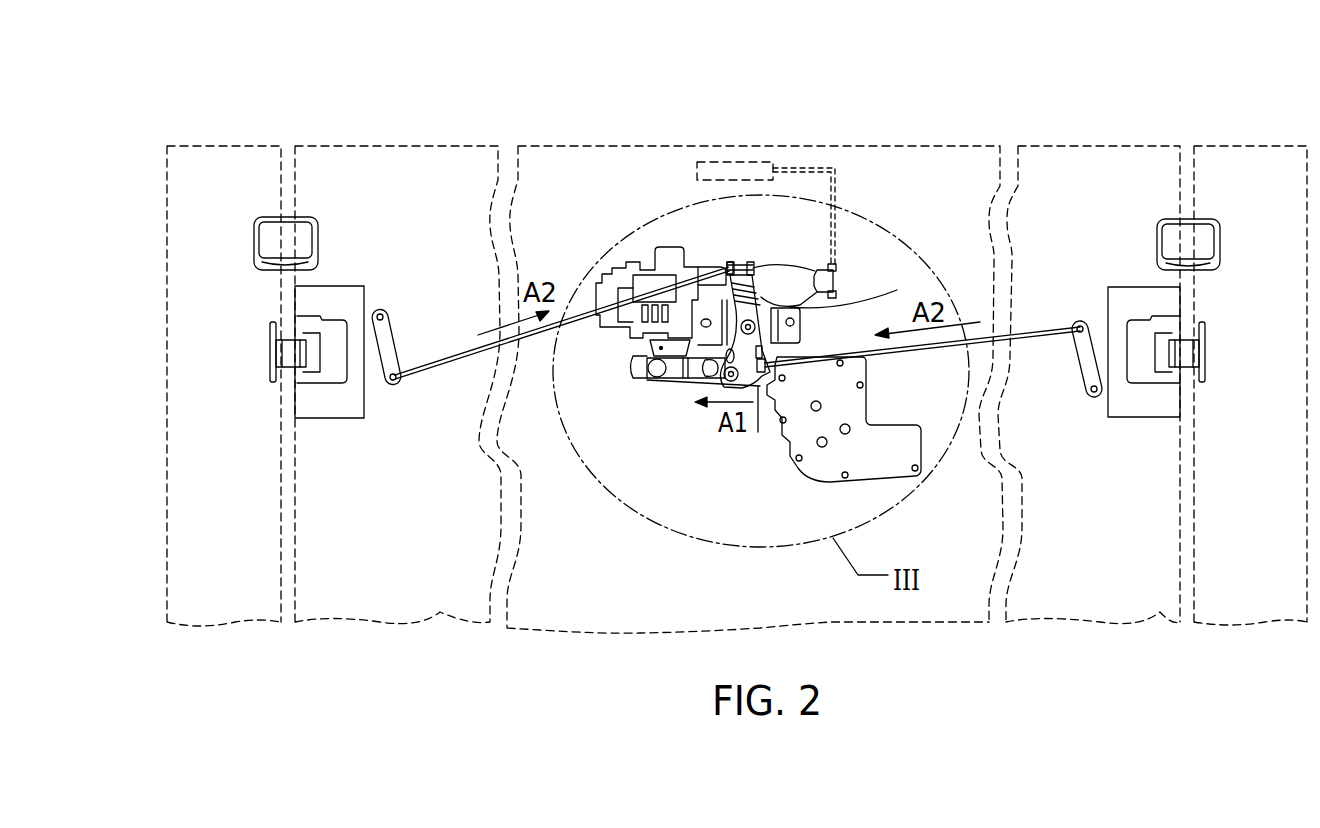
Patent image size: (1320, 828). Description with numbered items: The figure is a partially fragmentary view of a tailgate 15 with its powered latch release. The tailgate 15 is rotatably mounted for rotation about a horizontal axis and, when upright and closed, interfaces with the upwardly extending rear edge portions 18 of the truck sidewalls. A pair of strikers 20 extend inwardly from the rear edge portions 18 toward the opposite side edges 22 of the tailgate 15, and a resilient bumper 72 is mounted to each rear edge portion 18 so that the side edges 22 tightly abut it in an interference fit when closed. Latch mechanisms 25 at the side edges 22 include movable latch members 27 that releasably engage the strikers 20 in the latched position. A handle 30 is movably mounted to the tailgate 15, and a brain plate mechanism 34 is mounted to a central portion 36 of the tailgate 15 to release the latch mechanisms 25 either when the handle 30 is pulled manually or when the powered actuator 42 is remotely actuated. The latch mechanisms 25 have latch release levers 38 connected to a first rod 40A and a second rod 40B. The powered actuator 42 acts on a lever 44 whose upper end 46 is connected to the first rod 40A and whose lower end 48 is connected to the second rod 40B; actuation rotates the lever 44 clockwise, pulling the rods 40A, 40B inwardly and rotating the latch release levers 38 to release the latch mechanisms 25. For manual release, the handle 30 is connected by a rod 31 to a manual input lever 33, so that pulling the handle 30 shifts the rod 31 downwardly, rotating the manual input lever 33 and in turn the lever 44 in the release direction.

The tailgate 15 is at (445, 143).
The rear edge portion 18 is at (242, 160).
The striker 20 is at (288, 357).
The side edge 22 is at (292, 452).
The latch mechanism 25 is at (350, 402).
The movable latch member 27 is at (307, 370).
The handle 30 is at (745, 160).
The rod 31 is at (843, 177).
The manual input lever 33 is at (837, 283).
The brain plate mechanism 34 is at (893, 178).
The central portion 36 is at (838, 602).
The latch release lever 38 is at (400, 343).
The first rod 40A is at (428, 372).
The second rod 40B is at (1032, 337).
The powered actuator 42 is at (817, 462).
The lever 44 is at (754, 275).
The upper end 46 is at (737, 272).
The lower end 48 is at (752, 425).
The resilient bumper 72 is at (277, 242).